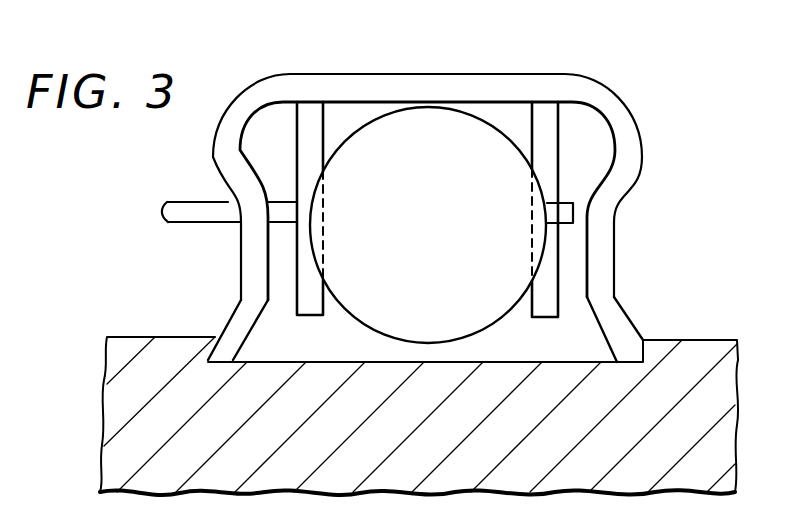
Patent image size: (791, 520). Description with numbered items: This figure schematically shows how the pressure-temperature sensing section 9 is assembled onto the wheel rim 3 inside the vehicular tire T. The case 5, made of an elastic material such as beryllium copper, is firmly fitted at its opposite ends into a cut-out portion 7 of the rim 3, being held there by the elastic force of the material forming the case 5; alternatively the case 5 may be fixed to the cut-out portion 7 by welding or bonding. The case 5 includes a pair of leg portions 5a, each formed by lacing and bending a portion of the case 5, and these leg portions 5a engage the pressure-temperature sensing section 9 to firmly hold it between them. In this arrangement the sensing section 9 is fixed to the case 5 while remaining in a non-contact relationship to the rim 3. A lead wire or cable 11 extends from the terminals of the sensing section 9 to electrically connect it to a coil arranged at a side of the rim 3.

The wheel rim 3 is at (716, 356).
The case 5 is at (606, 116).
The leg portions 5a is at (305, 130).
The cut-out portion 7 is at (212, 345).
The pressure-temperature sensing section 9 is at (444, 130).
The cable 11 is at (192, 212).
The vehicular tire T is at (717, 211).